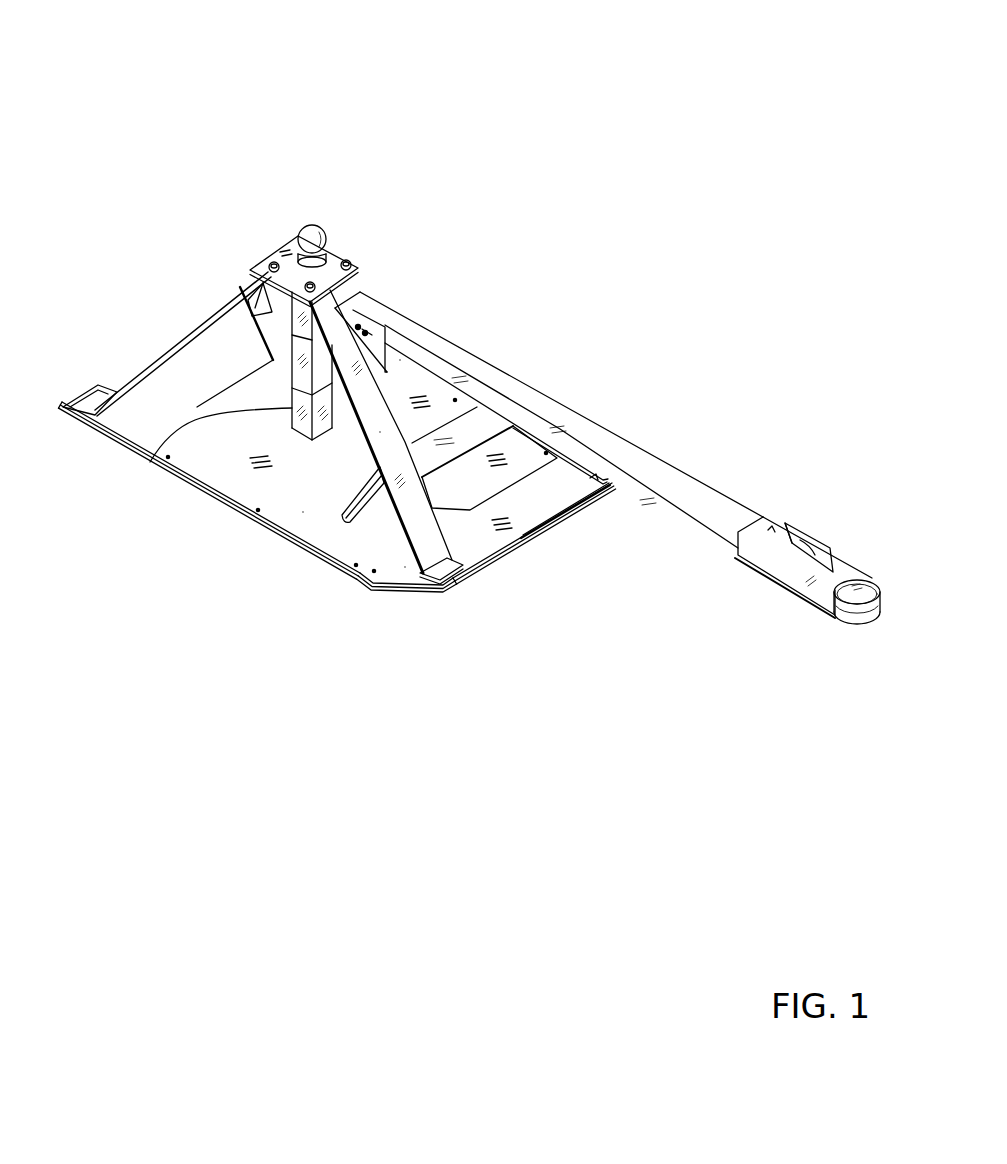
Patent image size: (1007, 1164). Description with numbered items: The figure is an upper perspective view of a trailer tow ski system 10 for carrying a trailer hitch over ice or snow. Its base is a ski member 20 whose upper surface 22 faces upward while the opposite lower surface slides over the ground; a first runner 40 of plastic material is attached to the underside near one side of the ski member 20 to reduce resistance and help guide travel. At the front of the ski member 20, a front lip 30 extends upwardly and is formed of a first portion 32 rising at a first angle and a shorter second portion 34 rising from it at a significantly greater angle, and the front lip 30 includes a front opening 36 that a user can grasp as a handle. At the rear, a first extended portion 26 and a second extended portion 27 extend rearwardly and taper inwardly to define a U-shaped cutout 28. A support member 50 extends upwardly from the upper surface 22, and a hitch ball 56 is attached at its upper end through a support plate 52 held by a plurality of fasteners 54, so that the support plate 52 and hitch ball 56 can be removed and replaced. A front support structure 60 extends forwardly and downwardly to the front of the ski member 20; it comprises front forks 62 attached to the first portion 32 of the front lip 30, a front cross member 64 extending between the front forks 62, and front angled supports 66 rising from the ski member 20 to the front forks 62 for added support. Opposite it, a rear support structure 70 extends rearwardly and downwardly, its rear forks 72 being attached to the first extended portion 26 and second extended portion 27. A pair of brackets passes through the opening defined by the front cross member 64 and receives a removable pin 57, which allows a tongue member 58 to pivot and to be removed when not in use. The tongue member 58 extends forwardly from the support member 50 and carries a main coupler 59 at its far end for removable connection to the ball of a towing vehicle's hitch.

The trailer tow ski system 10 is at (559, 169).
The ski member 20 is at (222, 449).
The upper surface 22 is at (297, 512).
The first extended portion 26 is at (133, 420).
The second extended portion 27 is at (275, 330).
The cutout 28 is at (217, 390).
The front lip 30 is at (465, 583).
The first portion 32 is at (405, 567).
The second portion 34 is at (527, 540).
The front opening 36 is at (570, 517).
The first runner 40 is at (303, 512).
The support member 50 is at (186, 415).
The support plate 52 is at (333, 257).
The fasteners 54 is at (352, 258).
The hitch ball 56 is at (300, 230).
The removable pin 57 is at (380, 340).
The tongue member 58 is at (687, 477).
The main coupler 59 is at (848, 593).
The front support structure 60 is at (398, 530).
The front forks 62 is at (380, 432).
The front cross member 64 is at (440, 453).
The front angled supports 66 is at (360, 503).
The rear support structure 70 is at (228, 288).
The rear forks 72 is at (257, 307).